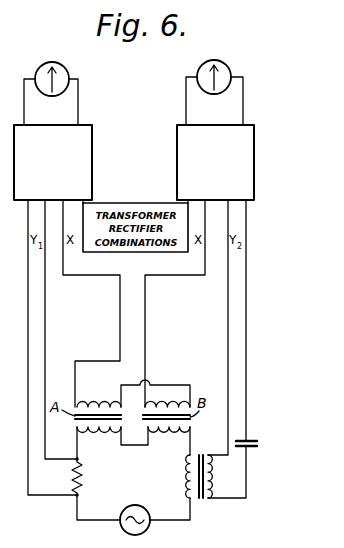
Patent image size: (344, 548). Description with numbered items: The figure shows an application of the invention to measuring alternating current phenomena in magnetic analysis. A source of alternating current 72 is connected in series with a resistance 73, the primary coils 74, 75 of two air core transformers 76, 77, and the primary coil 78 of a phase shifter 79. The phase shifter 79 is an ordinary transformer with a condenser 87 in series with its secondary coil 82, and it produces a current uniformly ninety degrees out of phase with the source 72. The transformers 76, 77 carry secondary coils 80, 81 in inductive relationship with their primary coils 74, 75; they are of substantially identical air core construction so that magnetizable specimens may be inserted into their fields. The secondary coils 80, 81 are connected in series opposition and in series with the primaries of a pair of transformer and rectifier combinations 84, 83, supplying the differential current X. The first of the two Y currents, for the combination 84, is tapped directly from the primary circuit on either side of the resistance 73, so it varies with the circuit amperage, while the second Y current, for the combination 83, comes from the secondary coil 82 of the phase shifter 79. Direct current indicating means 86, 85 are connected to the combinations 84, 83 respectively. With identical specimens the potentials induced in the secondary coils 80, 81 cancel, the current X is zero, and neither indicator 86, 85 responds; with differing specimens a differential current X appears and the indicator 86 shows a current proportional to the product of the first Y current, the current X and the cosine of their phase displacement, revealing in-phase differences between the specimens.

The source of alternating current 72 is at (130, 506).
The resistance 73 is at (74, 474).
The primary coil 74 is at (89, 442).
The primary coil 75 is at (169, 447).
The air core transformer 76 is at (85, 428).
The air core transformer 77 is at (180, 424).
The primary coil of phase shifter 78 is at (184, 478).
The phase shifter 79 is at (201, 501).
The secondary coil 80 is at (133, 392).
The secondary coil 81 is at (166, 396).
The secondary coil of phase shifter 82 is at (213, 478).
The transformer and rectifier combination 83 is at (215, 162).
The transformer and rectifier combination 84 is at (53, 162).
The current indicating means 85 is at (198, 67).
The current indicating means 86 is at (40, 64).
The condenser 87 is at (270, 434).